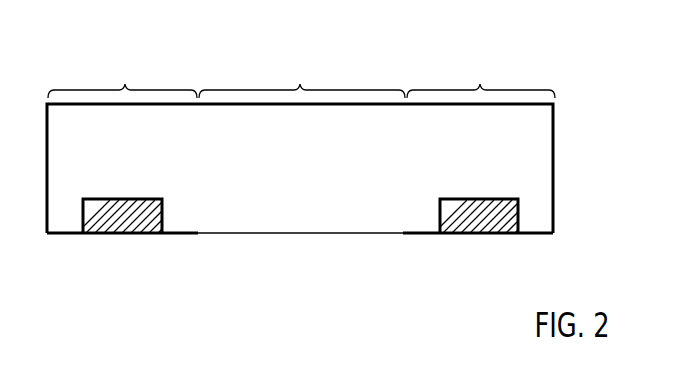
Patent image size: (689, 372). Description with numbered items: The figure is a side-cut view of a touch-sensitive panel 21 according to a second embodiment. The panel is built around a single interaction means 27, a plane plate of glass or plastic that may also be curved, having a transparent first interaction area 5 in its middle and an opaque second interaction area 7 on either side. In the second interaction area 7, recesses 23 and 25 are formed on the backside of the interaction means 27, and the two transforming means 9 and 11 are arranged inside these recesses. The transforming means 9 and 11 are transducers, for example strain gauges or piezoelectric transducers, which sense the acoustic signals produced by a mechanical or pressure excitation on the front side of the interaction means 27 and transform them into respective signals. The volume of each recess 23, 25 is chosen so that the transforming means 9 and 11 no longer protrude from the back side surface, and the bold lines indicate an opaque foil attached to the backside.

The touch-sensitive panel 21 is at (179, 70).
The second interaction area 7 is at (425, 265).
The first interaction area 5 is at (302, 78).
The single interaction means 27 is at (278, 235).
The recess 23 is at (118, 197).
The recess 25 is at (484, 197).
The transforming means 9 is at (118, 224).
The transforming means 11 is at (484, 224).